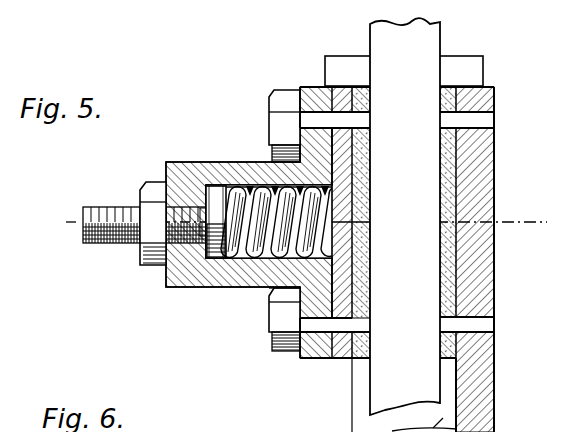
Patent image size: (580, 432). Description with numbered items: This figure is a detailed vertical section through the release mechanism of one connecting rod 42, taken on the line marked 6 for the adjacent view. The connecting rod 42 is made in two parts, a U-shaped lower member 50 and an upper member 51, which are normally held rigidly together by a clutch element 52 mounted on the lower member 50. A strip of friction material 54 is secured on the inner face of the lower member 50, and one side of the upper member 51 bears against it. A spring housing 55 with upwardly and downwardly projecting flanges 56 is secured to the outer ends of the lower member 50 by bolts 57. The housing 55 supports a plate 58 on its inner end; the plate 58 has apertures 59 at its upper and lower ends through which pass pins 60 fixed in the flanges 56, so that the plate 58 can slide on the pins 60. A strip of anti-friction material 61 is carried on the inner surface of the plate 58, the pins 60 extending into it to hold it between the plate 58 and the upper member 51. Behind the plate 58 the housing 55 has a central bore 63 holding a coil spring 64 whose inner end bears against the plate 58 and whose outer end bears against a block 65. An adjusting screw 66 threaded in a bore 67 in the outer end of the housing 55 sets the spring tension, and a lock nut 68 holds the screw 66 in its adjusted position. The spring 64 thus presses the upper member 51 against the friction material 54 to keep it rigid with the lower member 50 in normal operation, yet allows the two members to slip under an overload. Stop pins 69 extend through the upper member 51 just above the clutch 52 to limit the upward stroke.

The section line 6- 6 is at (304, 220).
The connecting rod 42 is at (485, 251).
The lower member 50 is at (487, 363).
The upper member 51 is at (417, 378).
The clutch element 52 is at (262, 160).
The strip of friction material 54 is at (445, 200).
The spring housing 55 is at (223, 270).
The flanges 56 is at (318, 88).
The bolts 57 is at (280, 313).
The plate 58 is at (343, 266).
The apertures 59 is at (330, 360).
The pins 60 is at (290, 351).
The strip of anti-friction material 61 is at (362, 293).
The central bore 63 is at (262, 260).
The coil spring 64 is at (227, 183).
The block 65 is at (211, 259).
The adjusting screw 66 is at (104, 245).
The bore 67 is at (166, 166).
The lock nut 68 is at (146, 264).
The stop pins 69 is at (470, 78).